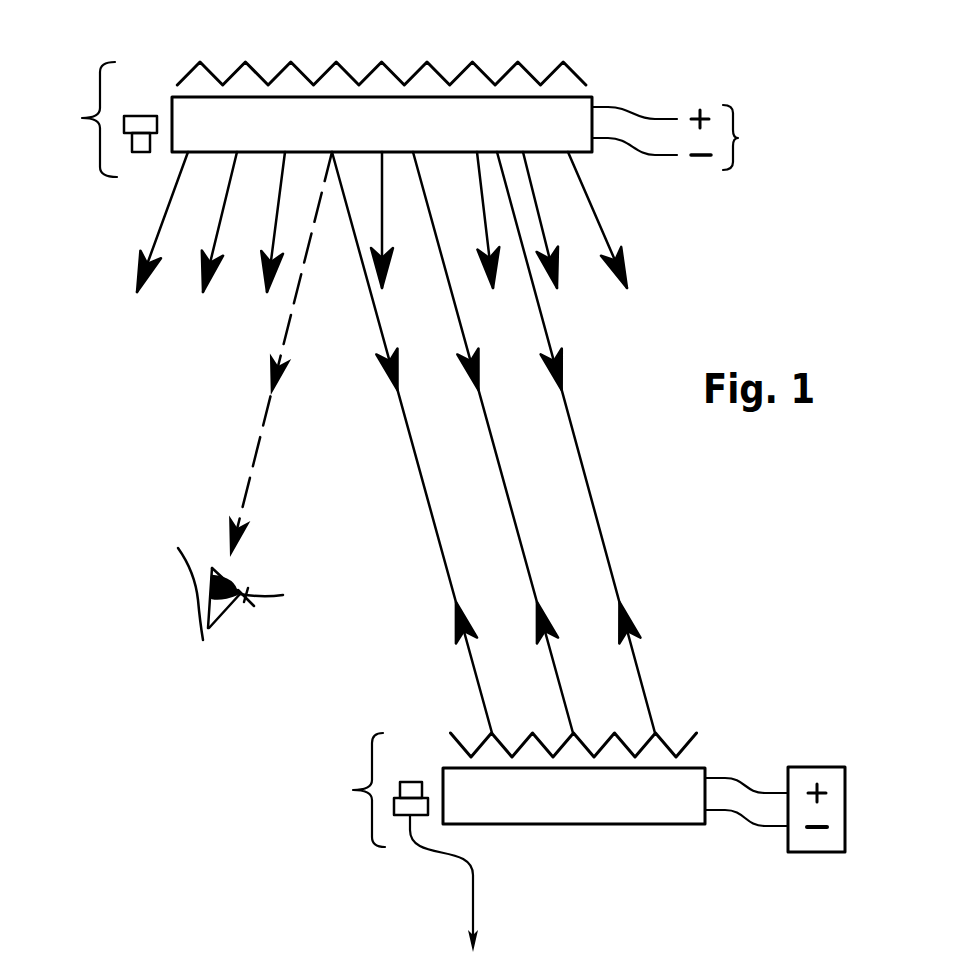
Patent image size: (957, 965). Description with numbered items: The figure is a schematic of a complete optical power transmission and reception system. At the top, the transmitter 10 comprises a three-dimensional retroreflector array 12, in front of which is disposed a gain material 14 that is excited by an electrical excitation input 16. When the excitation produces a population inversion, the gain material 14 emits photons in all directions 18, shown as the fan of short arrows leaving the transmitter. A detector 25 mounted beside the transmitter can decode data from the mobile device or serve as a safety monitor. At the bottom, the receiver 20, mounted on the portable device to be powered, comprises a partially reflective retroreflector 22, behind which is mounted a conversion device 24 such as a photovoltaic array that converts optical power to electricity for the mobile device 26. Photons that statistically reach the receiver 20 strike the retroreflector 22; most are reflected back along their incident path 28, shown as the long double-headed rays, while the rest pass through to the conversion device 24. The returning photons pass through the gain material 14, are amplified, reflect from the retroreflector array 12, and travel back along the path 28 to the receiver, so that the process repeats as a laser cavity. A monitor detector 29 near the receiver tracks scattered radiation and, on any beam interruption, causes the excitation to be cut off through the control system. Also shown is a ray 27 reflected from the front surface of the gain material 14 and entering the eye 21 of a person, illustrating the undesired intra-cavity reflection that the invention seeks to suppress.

The transmitter 10 is at (82, 118).
The 3-dimensional retroreflector array 12 is at (576, 74).
The gain material 14 is at (594, 97).
The electrical excitation input 16 is at (740, 138).
The photons emitted in all directions 18 is at (217, 233).
The receiver 20 is at (353, 790).
The eye 21 is at (195, 585).
The partially reflective retroreflector 22 is at (667, 740).
The conversion device 24 is at (623, 825).
The detector 25 is at (140, 116).
The mobile device 26 is at (803, 767).
The ray 27 is at (258, 447).
The incident path 28 is at (590, 470).
The monitor detector 29 is at (405, 815).